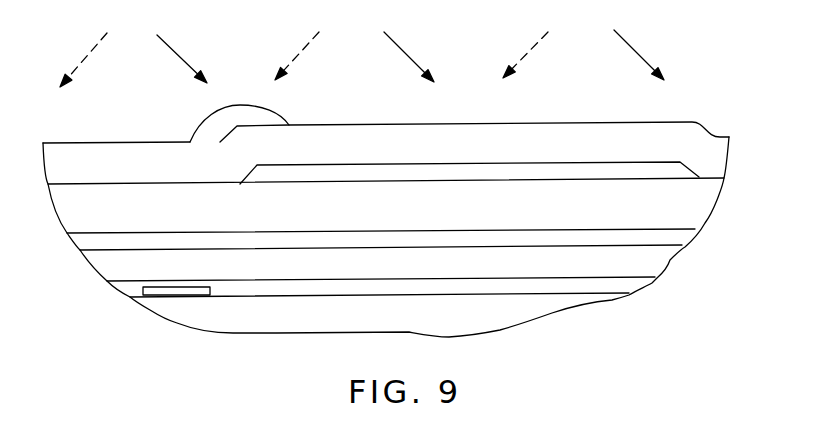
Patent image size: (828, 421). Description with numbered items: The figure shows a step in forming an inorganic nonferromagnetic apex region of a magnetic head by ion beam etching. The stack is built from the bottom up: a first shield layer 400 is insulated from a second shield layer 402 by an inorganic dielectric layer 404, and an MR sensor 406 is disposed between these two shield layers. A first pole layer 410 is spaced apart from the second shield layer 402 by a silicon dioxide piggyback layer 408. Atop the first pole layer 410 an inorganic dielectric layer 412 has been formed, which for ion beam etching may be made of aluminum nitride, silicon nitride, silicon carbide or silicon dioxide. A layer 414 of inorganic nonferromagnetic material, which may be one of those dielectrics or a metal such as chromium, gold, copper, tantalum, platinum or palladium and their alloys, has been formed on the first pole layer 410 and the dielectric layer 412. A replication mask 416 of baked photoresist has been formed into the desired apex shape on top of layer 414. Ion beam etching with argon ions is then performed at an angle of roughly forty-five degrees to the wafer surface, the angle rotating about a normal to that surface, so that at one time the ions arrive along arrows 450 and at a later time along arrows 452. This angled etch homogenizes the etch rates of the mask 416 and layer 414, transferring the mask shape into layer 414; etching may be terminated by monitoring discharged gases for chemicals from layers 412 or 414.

The first shield layer 400 is at (471, 325).
The second shield layer 402 is at (391, 275).
The inorganic dielectric layer 404 is at (288, 298).
The MR sensor 406 is at (176, 290).
The silicon dioxide piggyback layer 408 is at (160, 242).
The first pole layer 410 is at (503, 216).
The inorganic dielectric layer 412 is at (602, 162).
The inorganic nonferromagnetic layer 414 is at (338, 155).
The replication mask 416 is at (237, 106).
The arrows 450 is at (632, 48).
The arrows 452 is at (536, 40).